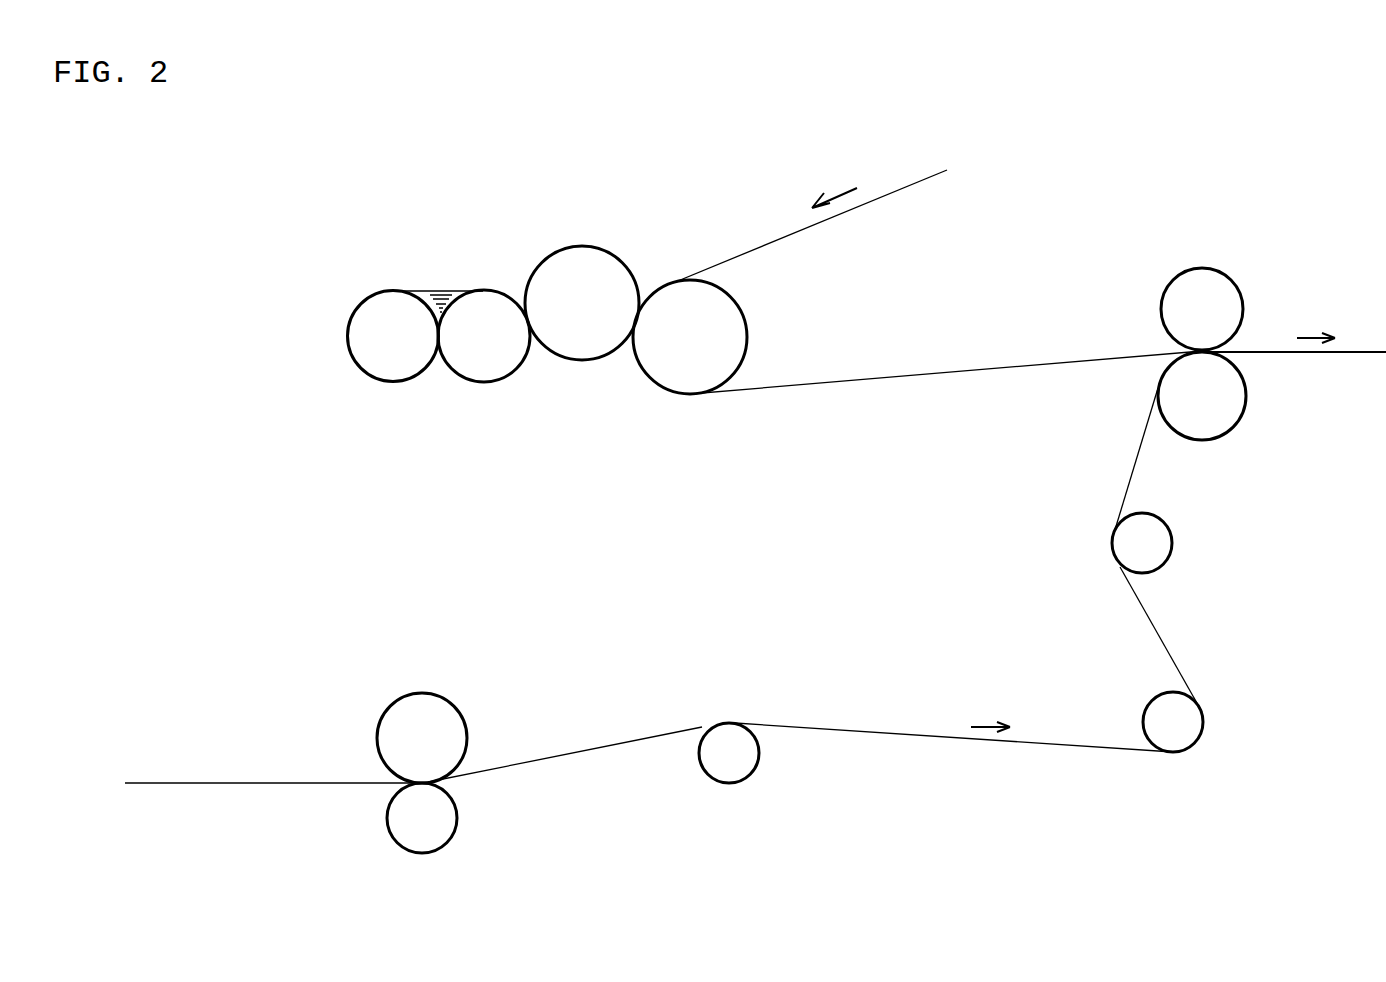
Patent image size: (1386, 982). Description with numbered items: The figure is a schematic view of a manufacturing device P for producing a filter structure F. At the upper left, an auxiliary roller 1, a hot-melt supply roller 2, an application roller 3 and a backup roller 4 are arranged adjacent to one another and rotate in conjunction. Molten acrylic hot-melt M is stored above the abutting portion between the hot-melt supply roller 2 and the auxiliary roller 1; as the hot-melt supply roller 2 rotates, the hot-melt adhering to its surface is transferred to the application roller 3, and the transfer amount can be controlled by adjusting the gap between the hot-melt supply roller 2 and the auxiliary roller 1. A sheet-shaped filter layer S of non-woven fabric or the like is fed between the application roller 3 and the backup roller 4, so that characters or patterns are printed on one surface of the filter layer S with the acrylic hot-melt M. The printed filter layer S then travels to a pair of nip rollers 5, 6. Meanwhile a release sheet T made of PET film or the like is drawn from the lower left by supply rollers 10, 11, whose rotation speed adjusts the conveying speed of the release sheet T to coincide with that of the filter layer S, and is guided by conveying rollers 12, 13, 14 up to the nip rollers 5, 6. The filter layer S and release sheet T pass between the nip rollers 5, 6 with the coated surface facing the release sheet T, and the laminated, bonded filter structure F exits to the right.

The auxiliary roller 1 is at (392, 370).
The hot-melt supply roller 2 is at (482, 370).
The application roller 3 is at (581, 252).
The backup roller 4 is at (745, 337).
The nip roller 5 is at (1237, 296).
The nip roller 6 is at (1234, 408).
The supply roller 10 is at (422, 697).
The supply roller 11 is at (425, 846).
The conveying roller 12 is at (727, 773).
The conveying roller 13 is at (1151, 713).
The conveying roller 14 is at (1164, 543).
The acrylic hot-melt M is at (440, 291).
The filter layer S is at (870, 179).
The release sheet T is at (175, 758).
The filter structure F is at (1355, 336).
The manufacturing device P is at (1197, 133).